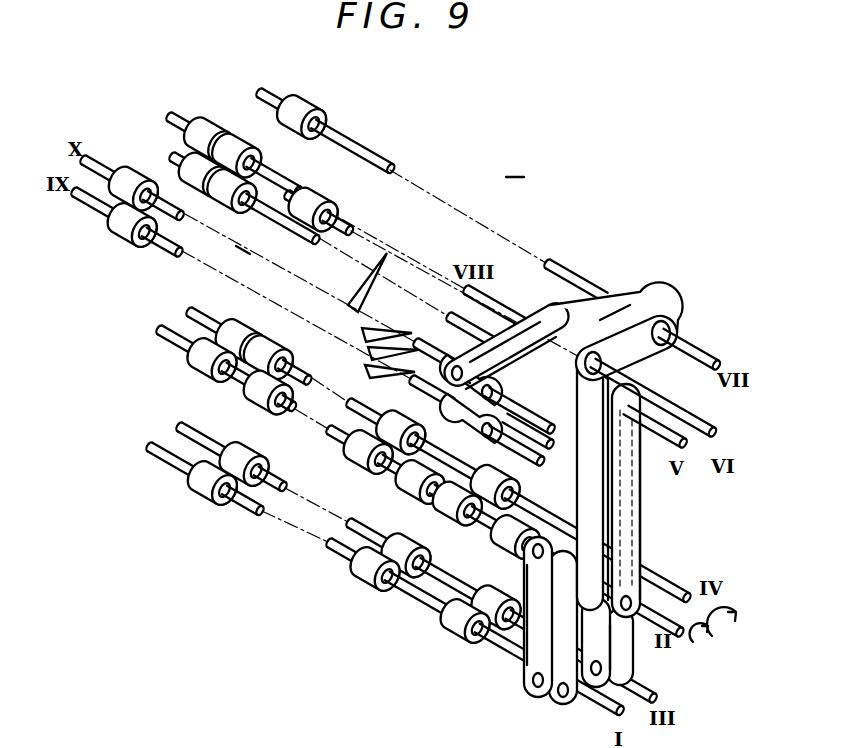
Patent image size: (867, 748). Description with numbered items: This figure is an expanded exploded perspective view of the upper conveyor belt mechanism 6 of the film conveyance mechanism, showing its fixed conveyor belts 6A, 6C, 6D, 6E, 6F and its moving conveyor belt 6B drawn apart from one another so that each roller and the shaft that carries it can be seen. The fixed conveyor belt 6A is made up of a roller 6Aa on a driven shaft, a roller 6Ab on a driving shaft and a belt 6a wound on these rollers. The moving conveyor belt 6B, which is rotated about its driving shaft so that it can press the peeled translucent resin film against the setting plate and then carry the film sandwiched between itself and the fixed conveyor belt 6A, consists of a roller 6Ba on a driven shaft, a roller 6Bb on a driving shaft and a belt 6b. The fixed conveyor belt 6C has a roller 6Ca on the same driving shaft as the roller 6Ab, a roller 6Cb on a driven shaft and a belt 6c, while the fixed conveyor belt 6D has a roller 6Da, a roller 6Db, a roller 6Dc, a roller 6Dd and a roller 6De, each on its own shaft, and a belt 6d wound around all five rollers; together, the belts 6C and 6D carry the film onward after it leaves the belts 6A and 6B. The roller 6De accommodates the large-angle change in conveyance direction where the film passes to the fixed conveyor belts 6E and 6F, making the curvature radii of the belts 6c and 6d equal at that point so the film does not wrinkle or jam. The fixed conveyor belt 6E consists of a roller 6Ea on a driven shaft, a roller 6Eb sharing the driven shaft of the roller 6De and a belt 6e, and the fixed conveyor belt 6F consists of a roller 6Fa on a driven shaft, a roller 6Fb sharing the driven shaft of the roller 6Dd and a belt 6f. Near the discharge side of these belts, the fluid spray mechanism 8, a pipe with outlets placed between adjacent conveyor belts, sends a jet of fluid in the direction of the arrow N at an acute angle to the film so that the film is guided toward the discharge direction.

The upper conveyor belt mechanism 6 is at (515, 163).
The fixed conveyor belt 6A is at (522, 655).
The belt 6a is at (527, 690).
The moving conveyor belt 6B is at (614, 632).
The belt 6b is at (612, 645).
The fixed conveyor belt 6C is at (640, 482).
The belt 6c is at (641, 512).
The fixed conveyor belt 6D is at (655, 303).
The belt 6d is at (622, 300).
The fixed conveyor belt 6E is at (493, 452).
The belt 6e is at (448, 400).
The fixed conveyor belt 6F is at (548, 318).
The belt 6f is at (515, 318).
The roller 6Aa is at (195, 502).
The roller 6Ab is at (192, 352).
The roller 6Ba is at (265, 455).
The roller 6Bb is at (242, 322).
The roller 6Ca is at (248, 397).
The roller 6Cb is at (236, 252).
The roller 6Da is at (273, 350).
The roller 6Db is at (320, 198).
The roller 6Dc is at (313, 108).
The roller 6Dd is at (257, 140).
The roller 6De is at (227, 205).
The roller 6Ea is at (115, 237).
The roller 6Eb is at (188, 175).
The roller 6Fa is at (126, 168).
The roller 6Fb is at (222, 125).
The fluid spray mechanism 8 is at (390, 256).
The arrow N is at (402, 380).